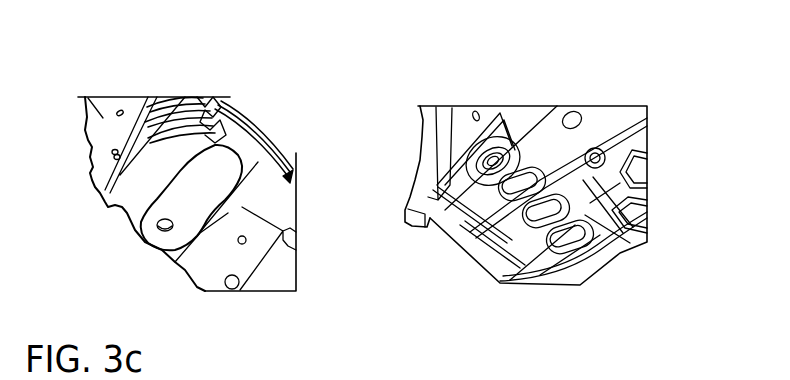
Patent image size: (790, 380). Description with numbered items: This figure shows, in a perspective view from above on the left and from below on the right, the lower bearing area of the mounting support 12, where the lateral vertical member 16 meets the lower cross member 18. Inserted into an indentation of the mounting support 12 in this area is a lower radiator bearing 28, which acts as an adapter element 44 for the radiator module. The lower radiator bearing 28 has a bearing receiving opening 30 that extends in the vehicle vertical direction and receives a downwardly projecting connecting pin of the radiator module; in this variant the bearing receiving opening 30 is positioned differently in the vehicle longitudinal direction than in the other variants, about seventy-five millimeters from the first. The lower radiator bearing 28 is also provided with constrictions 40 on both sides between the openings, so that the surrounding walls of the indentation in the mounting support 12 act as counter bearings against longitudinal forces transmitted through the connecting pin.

The mounting support 12 is at (191, 83).
The vertical member 16 is at (109, 120).
The lower cross member 18 is at (279, 209).
The lower radiator bearing 28 is at (369, 183).
The adapter element 44 is at (223, 163).
The bearing receiving opening 30 is at (160, 227).
The constriction 40 is at (175, 132).